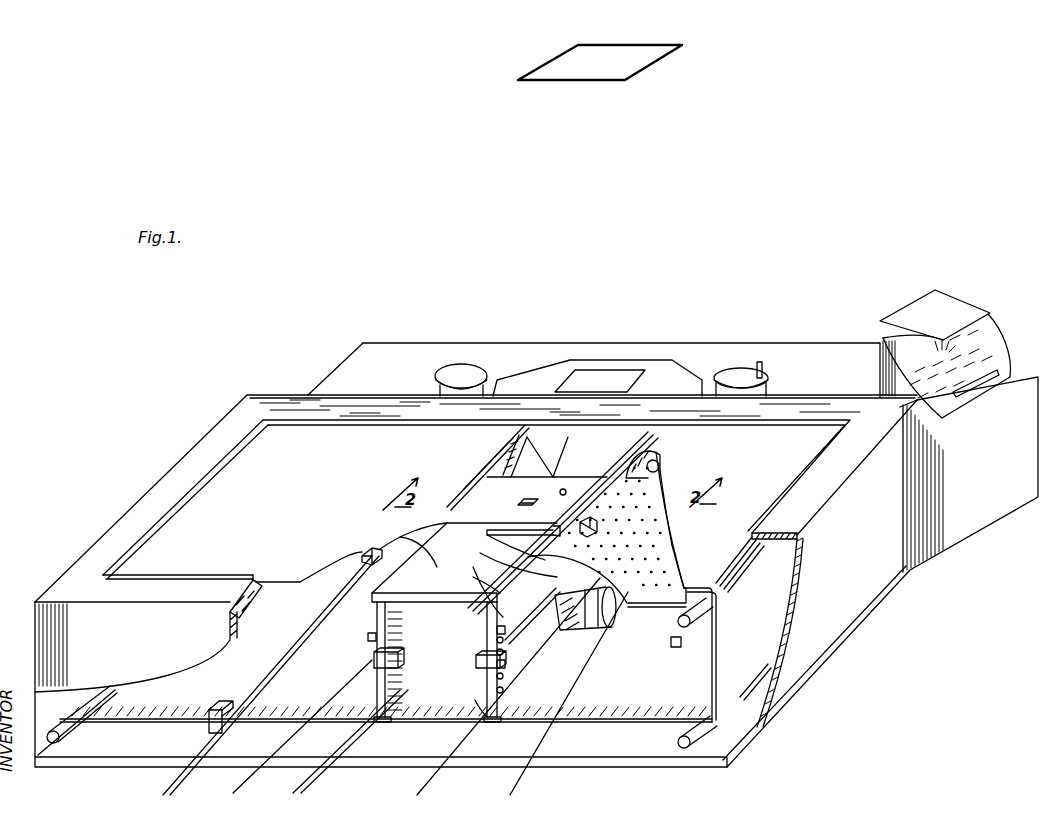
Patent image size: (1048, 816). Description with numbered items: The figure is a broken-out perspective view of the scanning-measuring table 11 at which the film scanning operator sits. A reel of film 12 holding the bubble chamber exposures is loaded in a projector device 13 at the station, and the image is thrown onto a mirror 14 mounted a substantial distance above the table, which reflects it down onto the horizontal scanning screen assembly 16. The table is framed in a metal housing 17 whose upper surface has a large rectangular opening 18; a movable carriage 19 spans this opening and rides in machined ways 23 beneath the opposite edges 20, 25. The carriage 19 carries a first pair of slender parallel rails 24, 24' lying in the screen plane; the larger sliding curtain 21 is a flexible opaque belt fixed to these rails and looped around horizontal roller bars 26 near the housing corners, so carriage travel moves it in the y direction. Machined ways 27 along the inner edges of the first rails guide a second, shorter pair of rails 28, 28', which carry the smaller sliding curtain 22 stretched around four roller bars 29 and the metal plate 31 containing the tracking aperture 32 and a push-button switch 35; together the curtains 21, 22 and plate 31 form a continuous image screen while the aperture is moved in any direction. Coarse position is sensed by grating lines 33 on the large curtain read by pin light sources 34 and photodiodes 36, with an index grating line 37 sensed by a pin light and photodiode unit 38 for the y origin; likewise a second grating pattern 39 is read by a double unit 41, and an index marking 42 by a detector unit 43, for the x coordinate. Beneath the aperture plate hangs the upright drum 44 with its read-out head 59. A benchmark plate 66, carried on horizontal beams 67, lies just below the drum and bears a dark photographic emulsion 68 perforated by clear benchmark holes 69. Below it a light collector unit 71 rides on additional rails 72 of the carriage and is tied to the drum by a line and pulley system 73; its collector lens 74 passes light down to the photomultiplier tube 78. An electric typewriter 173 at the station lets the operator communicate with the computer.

The scanning-measuring table 11 is at (233, 352).
The reel of film 12 is at (438, 372).
The projector device 13 is at (548, 368).
The mirror 14 is at (548, 62).
The scanning screen assembly 16 is at (234, 534).
The metal housing 17 is at (800, 590).
The rectangular opening 18 is at (136, 545).
The movable carriage 19 is at (374, 608).
The edge of opening 20 is at (256, 576).
The larger sliding curtain 21 is at (290, 473).
The smaller sliding curtain 22 is at (585, 453).
The machined ways 23 is at (253, 588).
The carriage rail 24 is at (606, 527).
The carriage rail 24' is at (373, 546).
The edge of opening 25 is at (392, 422).
The horizontal roller bars 26 is at (70, 724).
The machined ways 27 is at (550, 530).
The second carriage rail 28 is at (511, 523).
The second carriage rail 28' is at (518, 457).
The roller bars 29 is at (474, 580).
The metal plate 31 is at (482, 503).
The tracking aperture 32 is at (520, 504).
The grating lines 33 is at (190, 703).
The pin light sources 34 is at (224, 700).
The push-button electrical switch 35 is at (564, 489).
The photodiodes 36 is at (223, 724).
The index grating line 37 is at (362, 572).
The pin light and photodiode unit 38 is at (370, 536).
The second grating pattern 39 is at (394, 692).
The double pin light and photodiode unit 41 is at (400, 663).
The index marking 42 is at (480, 652).
The single pin light photodiode detector unit 43 is at (476, 662).
The upright drum 44 is at (482, 544).
The read-out head 59 is at (598, 524).
The benchmark plate 66 is at (660, 609).
The horizontal beams 67 is at (671, 642).
The photographic emulsion 68 is at (668, 541).
The holes 69 is at (664, 564).
The light collector unit 71 is at (555, 628).
The additional rails 72 is at (366, 637).
The line and pulley system 73 is at (658, 460).
The collector lens 74 is at (478, 560).
The photomultiplier tube 78 is at (586, 592).
The electric typewriter 173 is at (982, 314).